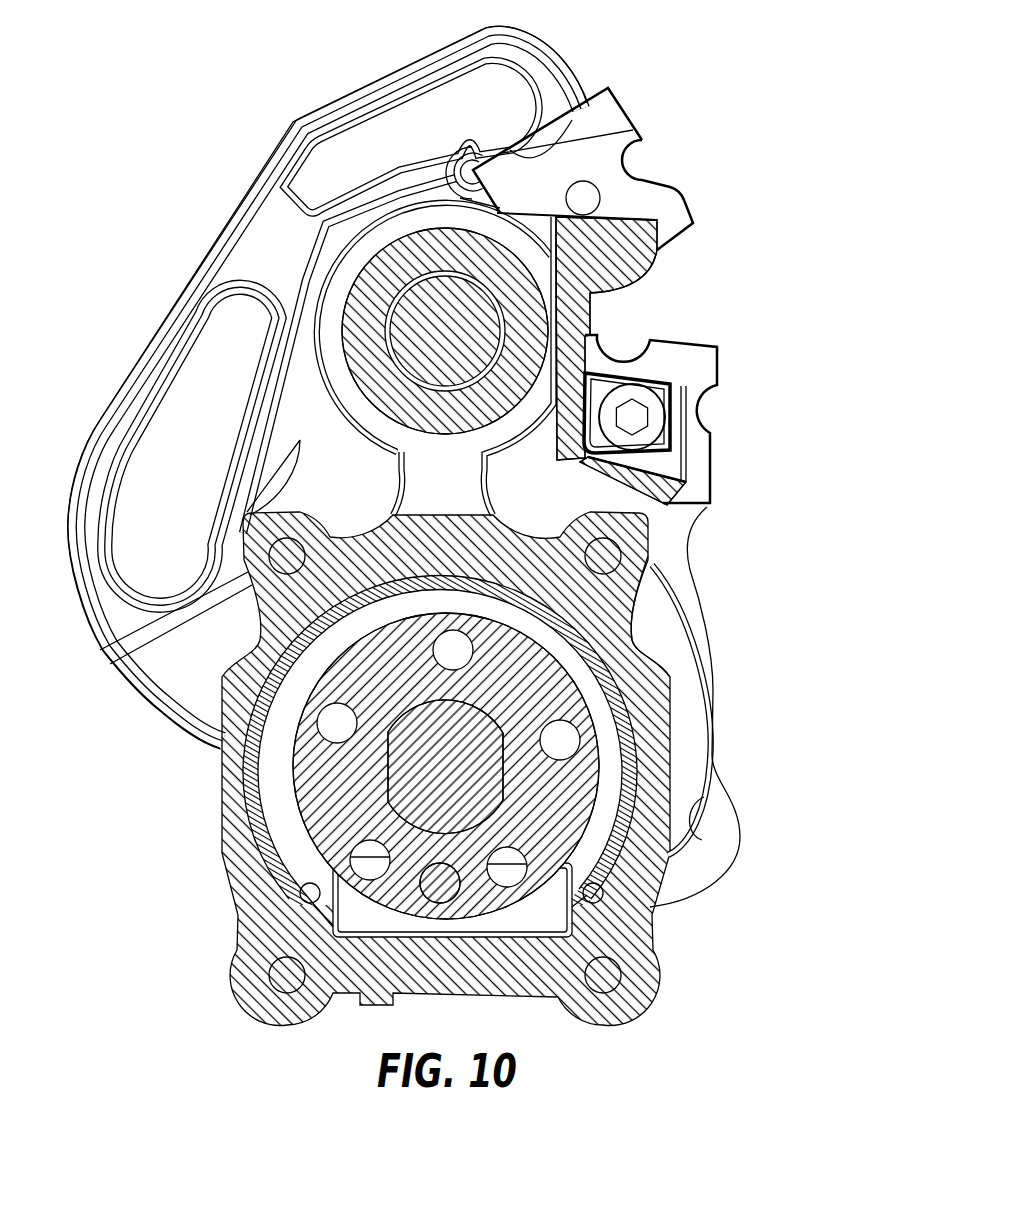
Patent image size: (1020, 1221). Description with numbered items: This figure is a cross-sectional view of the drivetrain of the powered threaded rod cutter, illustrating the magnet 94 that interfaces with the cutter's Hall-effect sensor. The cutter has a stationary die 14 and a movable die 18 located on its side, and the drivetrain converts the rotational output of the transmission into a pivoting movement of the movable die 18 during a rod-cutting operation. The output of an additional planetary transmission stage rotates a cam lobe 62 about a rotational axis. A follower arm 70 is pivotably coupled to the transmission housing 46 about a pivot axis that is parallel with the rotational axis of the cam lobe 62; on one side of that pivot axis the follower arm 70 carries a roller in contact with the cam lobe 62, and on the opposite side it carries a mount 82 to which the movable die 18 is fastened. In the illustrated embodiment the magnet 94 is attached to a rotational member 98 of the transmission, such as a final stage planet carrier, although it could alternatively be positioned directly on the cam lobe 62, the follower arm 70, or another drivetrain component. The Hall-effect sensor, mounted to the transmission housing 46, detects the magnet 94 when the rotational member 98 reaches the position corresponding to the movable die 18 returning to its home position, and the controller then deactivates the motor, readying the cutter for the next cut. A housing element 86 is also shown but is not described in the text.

The stationary die 14 is at (718, 372).
The movable die 18 is at (684, 200).
The transmission housing 46 is at (243, 962).
The cam lobe 62 is at (643, 646).
The follower arm 70 is at (181, 417).
The mount 82 is at (568, 96).
The housing cover 86 is at (711, 693).
The magnet 94 is at (333, 929).
The rotational member 98 is at (557, 802).